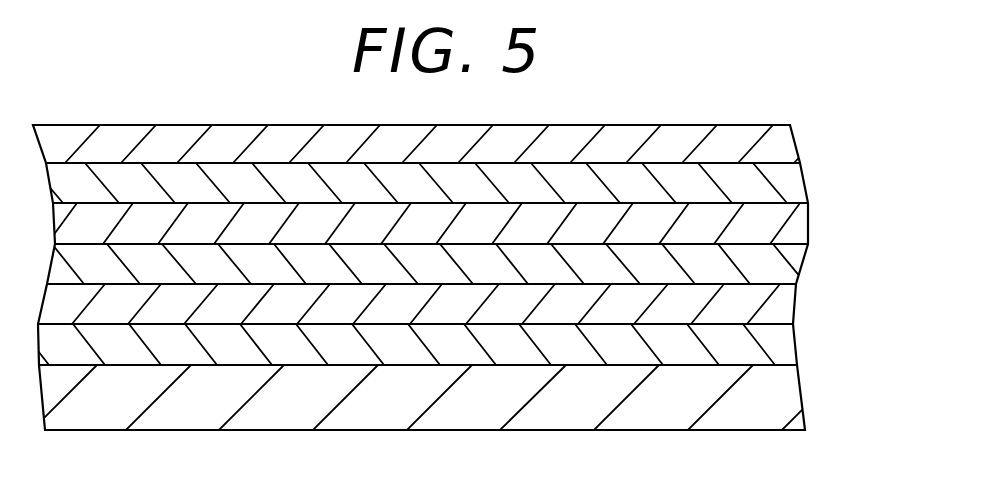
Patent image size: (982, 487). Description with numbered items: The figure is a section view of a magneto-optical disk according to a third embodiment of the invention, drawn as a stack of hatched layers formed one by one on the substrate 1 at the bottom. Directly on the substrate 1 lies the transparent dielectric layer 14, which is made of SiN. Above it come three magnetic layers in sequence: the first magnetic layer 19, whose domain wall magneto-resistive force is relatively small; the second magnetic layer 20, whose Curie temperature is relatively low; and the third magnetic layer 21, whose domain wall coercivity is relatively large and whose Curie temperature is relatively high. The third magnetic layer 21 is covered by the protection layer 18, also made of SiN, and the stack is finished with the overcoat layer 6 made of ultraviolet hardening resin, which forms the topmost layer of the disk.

The overcoat layer 6 is at (783, 145).
The protection layer 18 is at (790, 183).
The third magnetic layer 21 is at (783, 225).
The second magnetic layer 20 is at (777, 265).
The first magnetic layer 19 is at (773, 305).
The transparent dielectric layer 14 is at (775, 343).
The substrate 1 is at (782, 390).